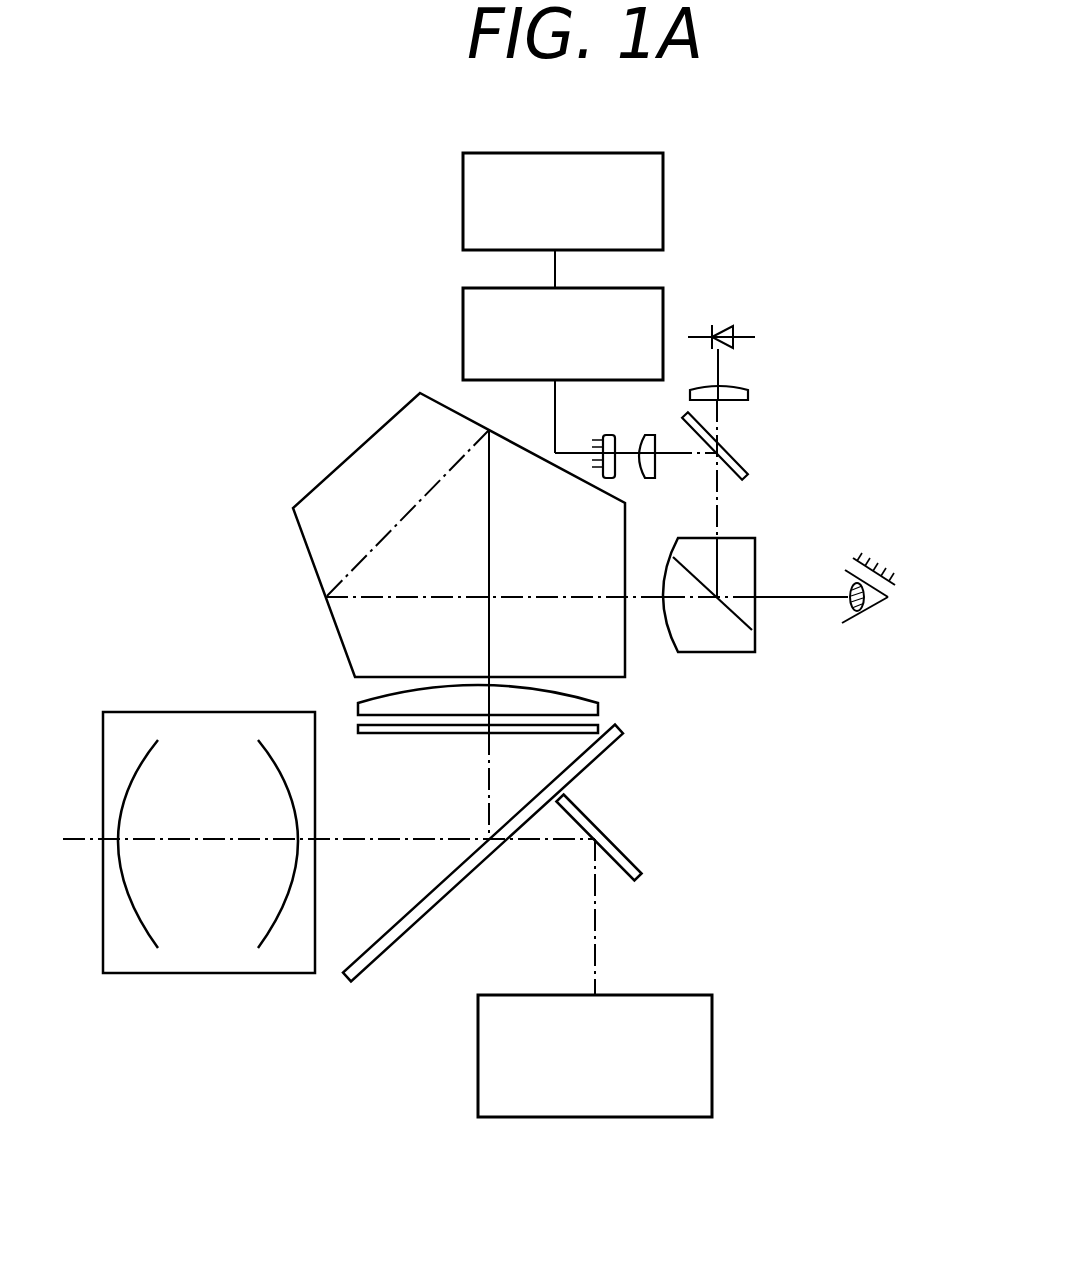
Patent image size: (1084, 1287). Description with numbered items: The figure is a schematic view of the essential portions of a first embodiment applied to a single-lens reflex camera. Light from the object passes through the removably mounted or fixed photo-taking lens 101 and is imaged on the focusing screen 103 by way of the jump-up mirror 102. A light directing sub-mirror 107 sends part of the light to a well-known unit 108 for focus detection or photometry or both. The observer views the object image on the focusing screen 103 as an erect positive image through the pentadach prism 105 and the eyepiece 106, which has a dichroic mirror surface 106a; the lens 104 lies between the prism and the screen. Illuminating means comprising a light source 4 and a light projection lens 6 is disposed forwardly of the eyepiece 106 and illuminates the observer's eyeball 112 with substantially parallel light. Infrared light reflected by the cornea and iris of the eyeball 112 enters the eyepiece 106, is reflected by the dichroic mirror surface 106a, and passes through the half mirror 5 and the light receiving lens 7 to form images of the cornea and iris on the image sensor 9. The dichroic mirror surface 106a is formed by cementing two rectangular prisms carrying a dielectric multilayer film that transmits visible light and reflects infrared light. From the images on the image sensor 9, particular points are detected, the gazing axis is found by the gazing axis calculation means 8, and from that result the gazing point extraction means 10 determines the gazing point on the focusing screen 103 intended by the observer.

The gazing point extraction means 10 is at (663, 177).
The gazing axis calculation means 8 is at (663, 310).
The light source 4 is at (735, 328).
The light projection lens 6 is at (742, 385).
The half mirror 5 is at (735, 452).
The image sensor 9 is at (603, 438).
The light receiving lens 7 is at (640, 440).
The pentadach prism 105 is at (351, 455).
The condenser lens 104 is at (598, 712).
The focusing screen 103 is at (372, 733).
The jump-up mirror 102 is at (400, 940).
The light directing sub-mirror 107 is at (627, 858).
The unit for focus detection or photometry 108 is at (712, 1068).
The photo-taking lens 101 is at (276, 973).
The eyepiece 106 is at (718, 652).
The dichroic mirror surface 106a is at (738, 612).
The eyeball 112 is at (870, 615).